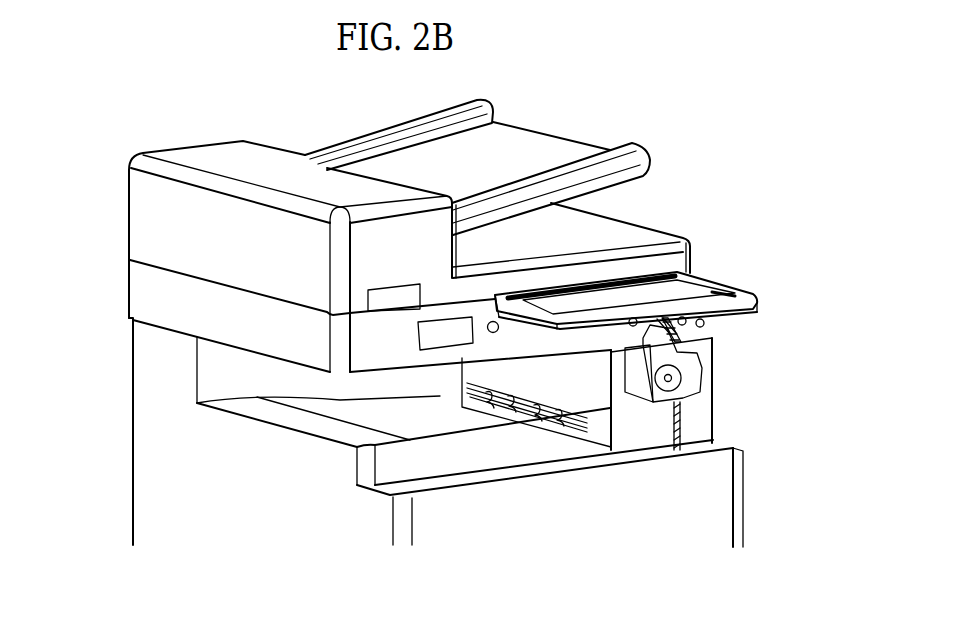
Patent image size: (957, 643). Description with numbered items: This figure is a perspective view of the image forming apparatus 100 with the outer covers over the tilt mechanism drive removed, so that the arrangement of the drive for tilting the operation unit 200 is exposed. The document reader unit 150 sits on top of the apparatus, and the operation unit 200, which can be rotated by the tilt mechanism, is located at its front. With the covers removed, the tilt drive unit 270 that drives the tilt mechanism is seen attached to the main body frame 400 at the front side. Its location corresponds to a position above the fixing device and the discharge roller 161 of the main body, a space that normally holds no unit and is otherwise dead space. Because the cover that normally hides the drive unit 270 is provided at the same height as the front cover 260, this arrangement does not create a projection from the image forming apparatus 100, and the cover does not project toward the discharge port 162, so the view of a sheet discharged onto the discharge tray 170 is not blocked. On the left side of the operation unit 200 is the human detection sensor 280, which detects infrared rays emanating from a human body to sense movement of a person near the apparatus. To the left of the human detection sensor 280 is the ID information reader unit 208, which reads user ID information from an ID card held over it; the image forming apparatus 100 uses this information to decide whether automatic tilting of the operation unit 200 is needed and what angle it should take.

The image forming apparatus 100 is at (124, 409).
The document reader unit 150 is at (136, 291).
The operation unit 200 is at (733, 289).
The ID information reader unit 208 is at (443, 343).
The human detection sensor 280 is at (495, 333).
The tilt drive unit 270 is at (700, 380).
The main body frame 400 is at (664, 406).
The front cover 260 is at (700, 495).
The discharge tray 170 is at (440, 427).
The discharge roller 161 is at (490, 402).
The discharge port 162 is at (537, 427).